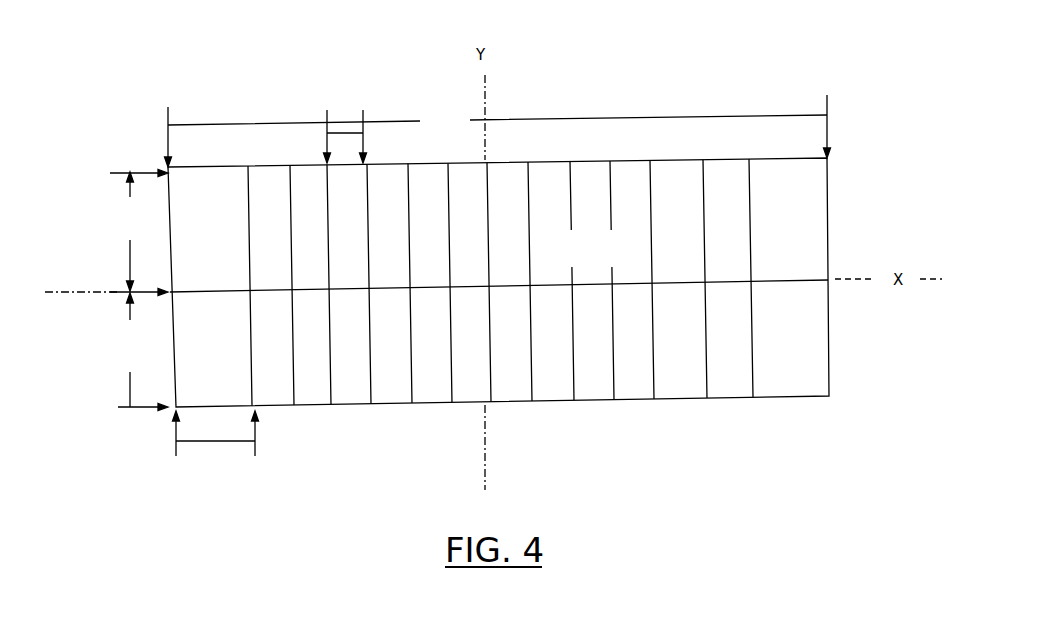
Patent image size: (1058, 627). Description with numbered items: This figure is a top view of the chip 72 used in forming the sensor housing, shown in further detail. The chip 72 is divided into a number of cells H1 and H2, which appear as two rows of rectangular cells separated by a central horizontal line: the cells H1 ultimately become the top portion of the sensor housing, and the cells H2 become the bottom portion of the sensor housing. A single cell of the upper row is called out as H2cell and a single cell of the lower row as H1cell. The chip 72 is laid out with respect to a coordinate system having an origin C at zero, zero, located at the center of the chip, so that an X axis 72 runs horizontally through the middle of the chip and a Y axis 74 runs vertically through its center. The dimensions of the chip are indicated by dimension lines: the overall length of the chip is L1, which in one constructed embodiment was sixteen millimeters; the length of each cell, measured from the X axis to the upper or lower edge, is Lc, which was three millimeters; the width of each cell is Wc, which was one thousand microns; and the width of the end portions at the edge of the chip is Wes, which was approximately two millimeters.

The chip 72 is at (165, 163).
The Y axis 74 is at (487, 152).
The length of chip L1 is at (498, 131).
The width of each cell Wc is at (340, 132).
The length of each cell Lc is at (139, 290).
The width of the end portions Wes is at (215, 444).
The H2 cell H2cell is at (352, 215).
The cell H2 is at (637, 160).
The H1 cell H1cell is at (350, 357).
The cell H1 is at (680, 402).
The origin C is at (490, 283).